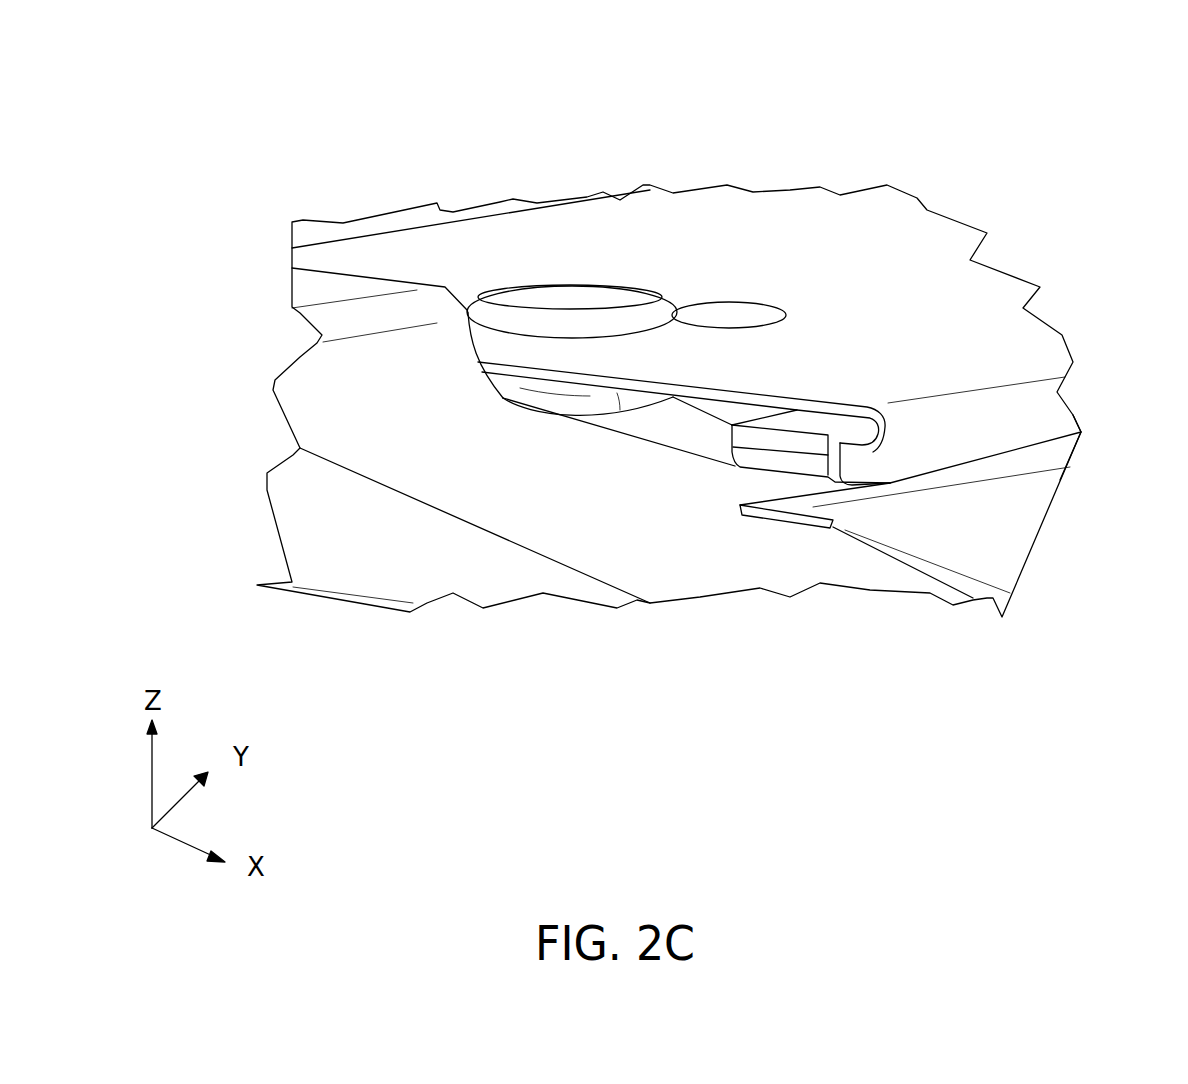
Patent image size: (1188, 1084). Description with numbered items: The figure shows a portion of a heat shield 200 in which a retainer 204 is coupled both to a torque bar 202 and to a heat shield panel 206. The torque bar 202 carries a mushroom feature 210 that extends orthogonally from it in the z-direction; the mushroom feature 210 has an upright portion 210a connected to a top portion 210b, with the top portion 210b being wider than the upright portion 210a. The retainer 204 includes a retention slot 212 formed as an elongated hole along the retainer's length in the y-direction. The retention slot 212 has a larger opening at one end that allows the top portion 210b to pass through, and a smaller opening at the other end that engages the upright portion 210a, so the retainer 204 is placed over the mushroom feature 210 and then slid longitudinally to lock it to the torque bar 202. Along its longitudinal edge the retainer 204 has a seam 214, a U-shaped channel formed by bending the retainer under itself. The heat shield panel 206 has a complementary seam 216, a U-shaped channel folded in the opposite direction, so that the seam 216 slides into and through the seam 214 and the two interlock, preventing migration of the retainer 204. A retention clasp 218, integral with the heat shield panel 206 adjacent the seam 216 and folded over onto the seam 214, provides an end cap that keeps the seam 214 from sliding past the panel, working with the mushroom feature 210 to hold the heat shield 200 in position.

The heat shield 200 is at (286, 138).
The torque bar 202 is at (479, 456).
The retainer 204 is at (930, 366).
The heat shield panel 206 is at (1020, 537).
The mushroom feature 210 is at (573, 345).
The upright portion 210a is at (538, 395).
The top portion 210b is at (566, 314).
The retention slot 212 is at (742, 317).
The seam 214 is at (1043, 412).
The seam 216 is at (720, 416).
The retention clasp 218 is at (772, 463).